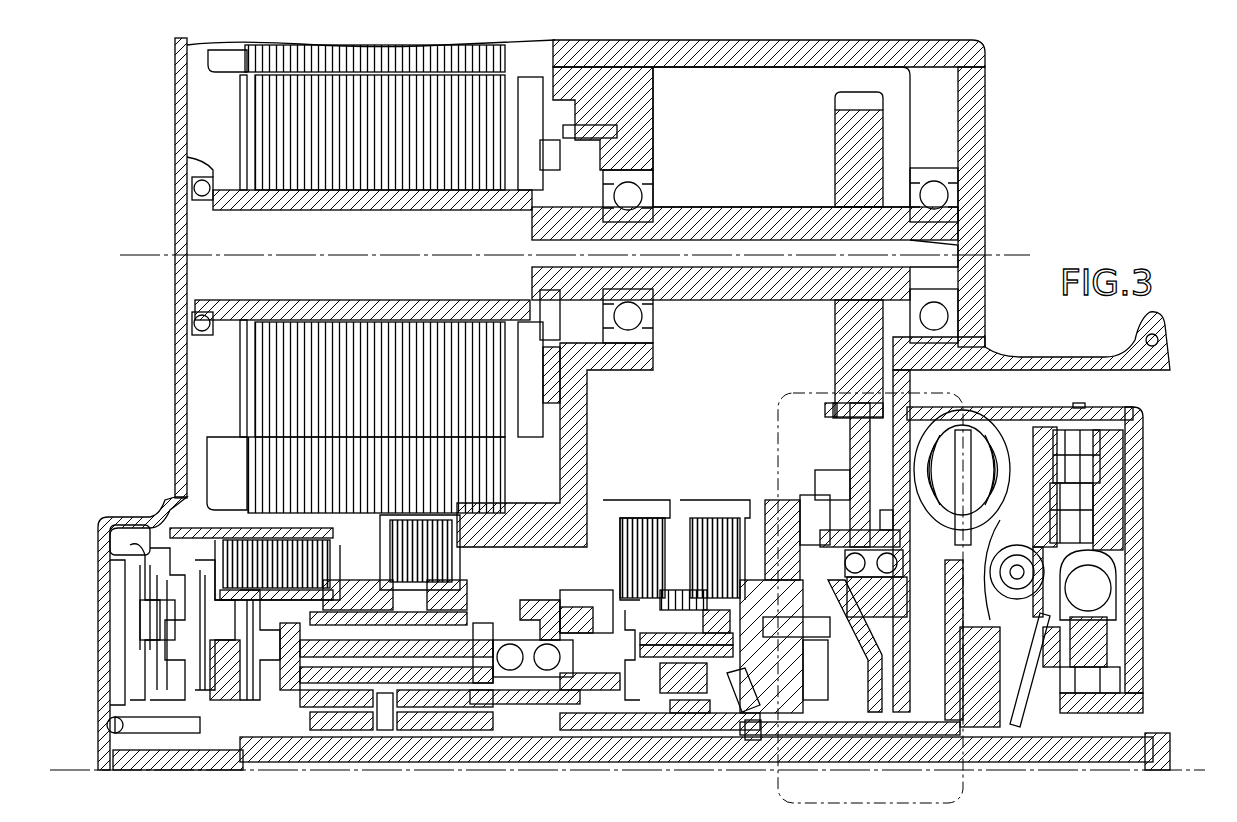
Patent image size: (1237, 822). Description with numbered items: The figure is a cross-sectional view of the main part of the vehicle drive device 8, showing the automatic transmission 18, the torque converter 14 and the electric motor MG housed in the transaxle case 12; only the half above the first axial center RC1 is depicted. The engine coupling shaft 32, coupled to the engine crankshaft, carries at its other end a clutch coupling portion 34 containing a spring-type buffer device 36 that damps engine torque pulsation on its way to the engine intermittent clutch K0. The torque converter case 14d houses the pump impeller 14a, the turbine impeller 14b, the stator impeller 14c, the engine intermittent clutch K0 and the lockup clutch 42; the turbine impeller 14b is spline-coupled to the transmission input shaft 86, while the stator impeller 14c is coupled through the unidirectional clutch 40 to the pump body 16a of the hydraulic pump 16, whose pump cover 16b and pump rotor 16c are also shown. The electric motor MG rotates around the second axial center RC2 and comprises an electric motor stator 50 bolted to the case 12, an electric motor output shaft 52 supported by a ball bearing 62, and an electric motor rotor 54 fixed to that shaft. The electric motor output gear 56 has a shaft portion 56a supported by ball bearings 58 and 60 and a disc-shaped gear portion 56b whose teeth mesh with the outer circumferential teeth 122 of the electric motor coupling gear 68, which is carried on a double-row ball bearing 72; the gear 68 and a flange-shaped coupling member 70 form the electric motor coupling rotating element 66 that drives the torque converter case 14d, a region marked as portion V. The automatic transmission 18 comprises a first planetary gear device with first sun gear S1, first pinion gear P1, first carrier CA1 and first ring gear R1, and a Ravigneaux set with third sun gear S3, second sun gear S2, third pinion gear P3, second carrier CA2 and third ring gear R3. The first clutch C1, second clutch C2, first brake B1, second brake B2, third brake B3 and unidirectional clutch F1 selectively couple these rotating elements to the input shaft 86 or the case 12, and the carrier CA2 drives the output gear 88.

The vehicle drive device 8 is at (70, 62).
The transaxle case 12 is at (177, 82).
The electric motor MG is at (215, 123).
The ball bearing 62 is at (208, 186).
The second axial center RC2 is at (148, 255).
The ball bearing 60 is at (652, 197).
The electric motor output gear 56 is at (785, 178).
The shaft portion 56a is at (716, 208).
The gear portion 56b is at (836, 137).
The ball bearing 58 is at (912, 182).
The electric motor output shaft 52 is at (217, 322).
The electric motor rotor 54 is at (258, 380).
The electric motor stator 50 is at (258, 450).
The outer circumferential teeth 122 is at (835, 408).
The automatic transmission 18 is at (66, 598).
The first axial center RC1 is at (66, 775).
The first clutch C1 is at (226, 534).
The second clutch C2 is at (305, 530).
The third ring gear R3 is at (392, 600).
The unidirectional clutch F1 is at (424, 598).
The third sun gear S3 is at (345, 732).
The third pinion gear P3 is at (390, 735).
The second sun gear S2 is at (420, 735).
The second carrier CA2 is at (478, 735).
The second brake B2 is at (548, 562).
The output gear 88 is at (605, 590).
The third brake B3 is at (612, 514).
The first brake B1 is at (674, 514).
The first ring gear R1 is at (650, 626).
The first pinion gear P1 is at (630, 646).
The first carrier CA1 is at (620, 730).
The first sun gear S1 is at (660, 735).
The transmission input shaft 86 is at (752, 740).
The hydraulic pump 16 is at (768, 458).
The pump body 16a is at (770, 500).
The pump cover 16b is at (872, 740).
The pump rotor 16c is at (818, 740).
The electric motor coupling rotating element 66 is at (822, 482).
The electric motor coupling gear 68 is at (852, 452).
The ball bearing 72 is at (895, 518).
The coupling member 70 is at (862, 635).
The portion V is at (784, 394).
The unidirectional clutch 40 is at (966, 775).
The torque converter 14 is at (1172, 460).
The pump impeller 14a is at (943, 440).
The turbine impeller 14b is at (990, 438).
The stator impeller 14c is at (937, 626).
The torque converter case 14d is at (1034, 408).
The lockup clutch 42 is at (1095, 463).
The engine intermittent clutch K0 is at (1100, 482).
The buffer device 36 is at (1112, 590).
The clutch coupling portion 34 is at (1130, 665).
The engine coupling shaft 32 is at (1170, 735).